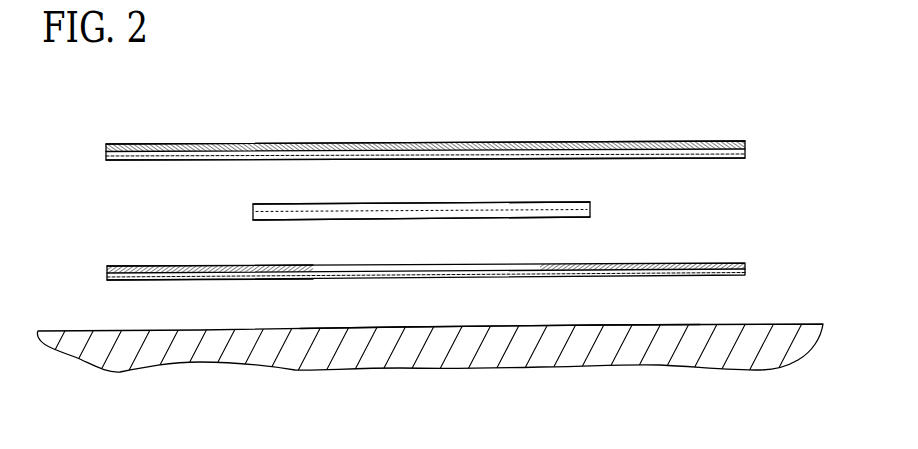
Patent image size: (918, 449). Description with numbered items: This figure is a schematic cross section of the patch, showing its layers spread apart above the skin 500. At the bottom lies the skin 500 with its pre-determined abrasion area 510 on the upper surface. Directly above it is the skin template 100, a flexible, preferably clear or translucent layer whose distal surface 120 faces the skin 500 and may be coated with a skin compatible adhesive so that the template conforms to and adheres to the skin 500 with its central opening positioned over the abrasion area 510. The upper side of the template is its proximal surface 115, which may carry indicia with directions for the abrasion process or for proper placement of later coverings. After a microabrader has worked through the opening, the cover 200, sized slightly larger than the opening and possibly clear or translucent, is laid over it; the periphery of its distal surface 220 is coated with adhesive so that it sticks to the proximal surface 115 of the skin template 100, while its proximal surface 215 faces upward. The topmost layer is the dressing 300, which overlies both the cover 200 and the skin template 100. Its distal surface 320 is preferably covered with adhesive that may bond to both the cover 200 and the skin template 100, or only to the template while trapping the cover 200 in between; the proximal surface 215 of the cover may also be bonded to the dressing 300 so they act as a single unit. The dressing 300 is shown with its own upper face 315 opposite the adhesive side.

The skin template 100 is at (724, 249).
The proximal surface 115 is at (160, 267).
The distal surface 120 is at (190, 282).
The cover 200 is at (239, 210).
The proximal surface 215 is at (562, 203).
The distal surface 220 is at (523, 218).
The dressing 300 is at (676, 134).
The second electrode layer 315 is at (462, 143).
The distal surface 320 is at (117, 161).
The skin 500 is at (566, 362).
The abrasion area 510 is at (481, 326).